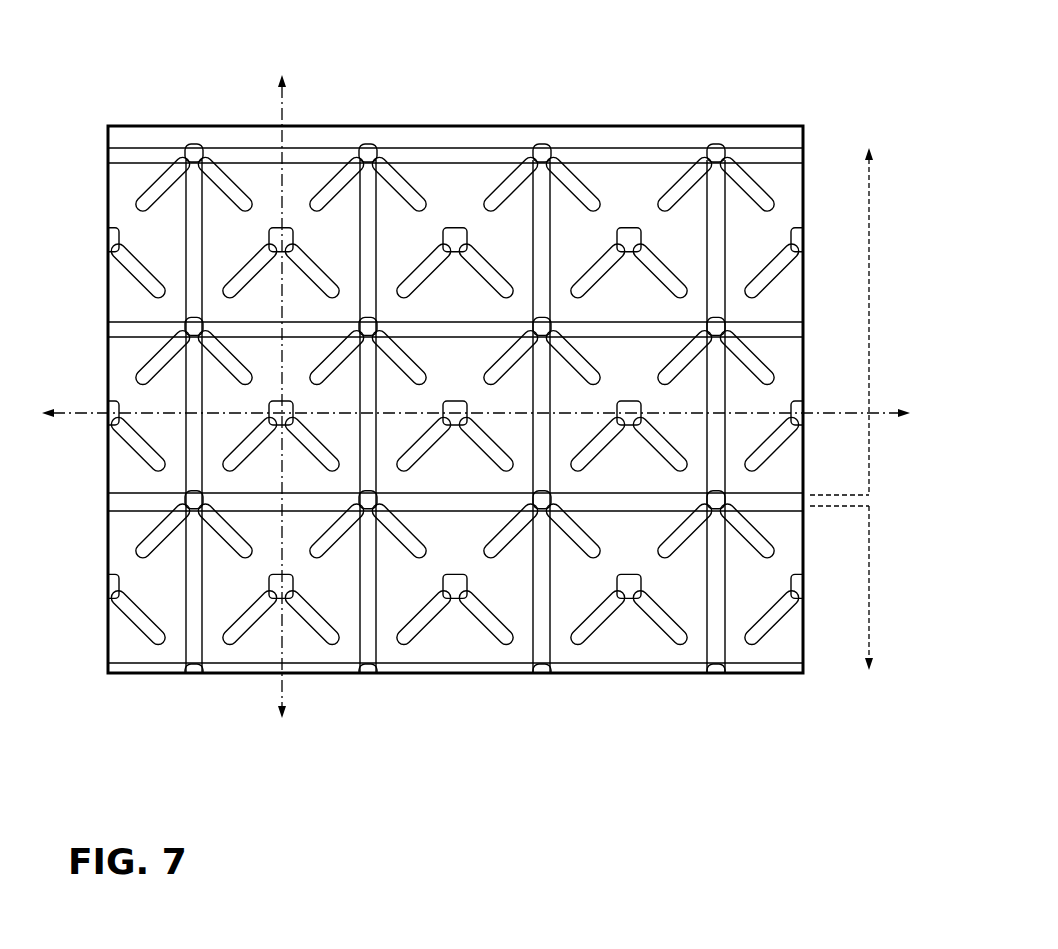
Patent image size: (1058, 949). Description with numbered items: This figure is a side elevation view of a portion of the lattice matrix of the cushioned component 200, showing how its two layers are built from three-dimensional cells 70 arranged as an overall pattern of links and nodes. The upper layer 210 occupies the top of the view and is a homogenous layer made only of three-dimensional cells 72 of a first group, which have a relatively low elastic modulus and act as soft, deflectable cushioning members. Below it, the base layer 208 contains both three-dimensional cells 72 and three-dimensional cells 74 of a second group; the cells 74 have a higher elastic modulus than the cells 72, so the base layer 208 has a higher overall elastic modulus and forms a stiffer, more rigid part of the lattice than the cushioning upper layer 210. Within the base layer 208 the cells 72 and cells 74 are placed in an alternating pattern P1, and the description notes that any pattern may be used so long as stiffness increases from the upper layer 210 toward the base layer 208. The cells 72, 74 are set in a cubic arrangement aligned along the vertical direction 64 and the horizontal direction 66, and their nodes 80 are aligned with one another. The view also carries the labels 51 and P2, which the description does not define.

The joint line 51 is at (882, 447).
The vertical direction 64 is at (284, 101).
The horizontal direction 66 is at (68, 408).
The three-dimensional cells 70 is at (582, 105).
The three-dimensional cells of the first group 72 is at (248, 243).
The three-dimensional cells of the second group 74 is at (128, 195).
The nodes 80 is at (290, 228).
The cushioned component 200 is at (893, 308).
The base layer 208 is at (872, 560).
The upper layer 210 is at (870, 250).
The alternating pattern P1 is at (818, 640).
The second plane P2 is at (778, 112).